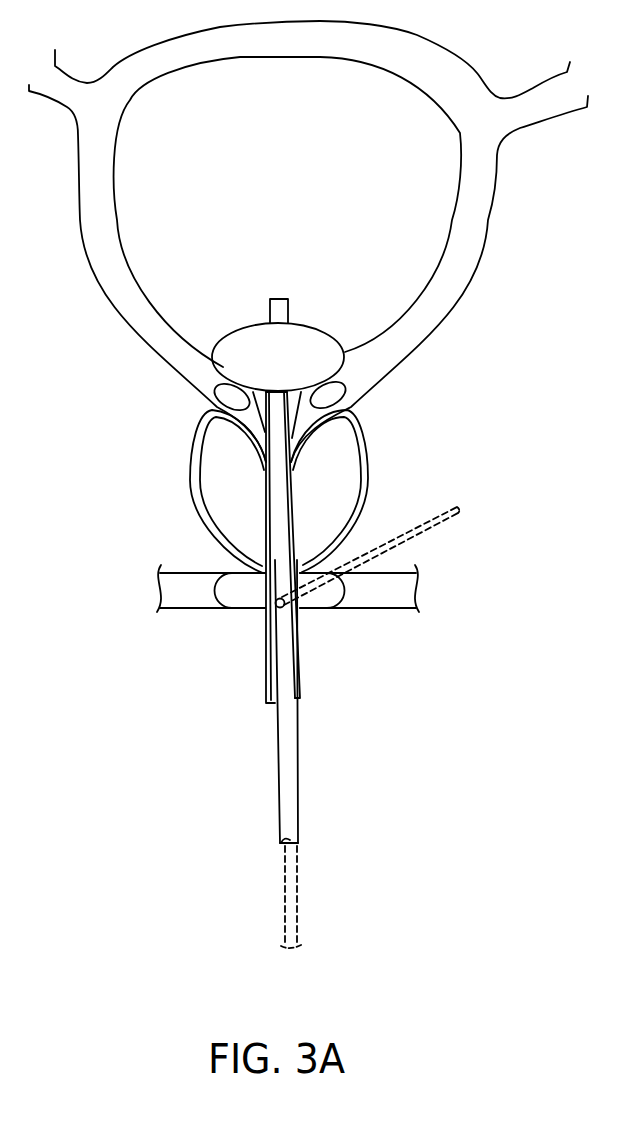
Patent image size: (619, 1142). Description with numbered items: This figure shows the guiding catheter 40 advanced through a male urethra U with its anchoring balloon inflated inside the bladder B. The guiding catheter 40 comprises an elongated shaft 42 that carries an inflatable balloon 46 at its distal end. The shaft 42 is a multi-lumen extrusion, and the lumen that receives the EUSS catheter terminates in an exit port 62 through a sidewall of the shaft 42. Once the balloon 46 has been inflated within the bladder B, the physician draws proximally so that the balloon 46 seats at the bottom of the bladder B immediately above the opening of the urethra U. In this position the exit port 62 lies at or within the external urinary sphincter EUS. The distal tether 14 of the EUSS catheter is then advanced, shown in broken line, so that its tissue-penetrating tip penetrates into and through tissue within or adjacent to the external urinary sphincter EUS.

The distal tether 14 is at (412, 520).
The guiding catheter 40 is at (256, 764).
The elongated shaft 42 is at (298, 770).
The inflatable balloon 46 is at (310, 343).
The exit port 62 is at (297, 605).
The bladder B is at (278, 144).
The urethra U is at (258, 492).
The external urinary sphincter EUS is at (245, 595).